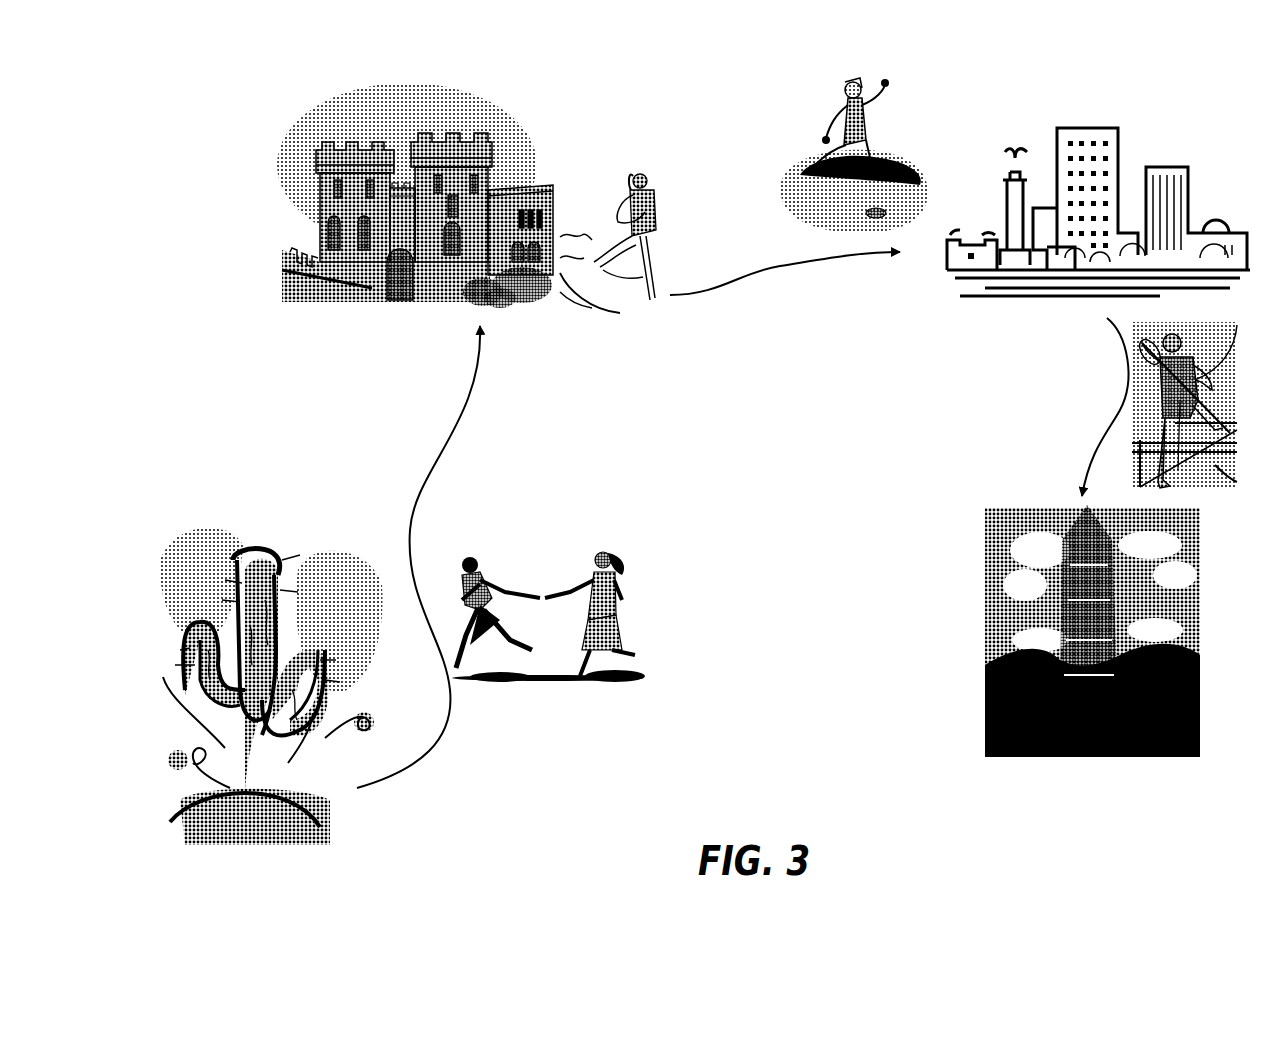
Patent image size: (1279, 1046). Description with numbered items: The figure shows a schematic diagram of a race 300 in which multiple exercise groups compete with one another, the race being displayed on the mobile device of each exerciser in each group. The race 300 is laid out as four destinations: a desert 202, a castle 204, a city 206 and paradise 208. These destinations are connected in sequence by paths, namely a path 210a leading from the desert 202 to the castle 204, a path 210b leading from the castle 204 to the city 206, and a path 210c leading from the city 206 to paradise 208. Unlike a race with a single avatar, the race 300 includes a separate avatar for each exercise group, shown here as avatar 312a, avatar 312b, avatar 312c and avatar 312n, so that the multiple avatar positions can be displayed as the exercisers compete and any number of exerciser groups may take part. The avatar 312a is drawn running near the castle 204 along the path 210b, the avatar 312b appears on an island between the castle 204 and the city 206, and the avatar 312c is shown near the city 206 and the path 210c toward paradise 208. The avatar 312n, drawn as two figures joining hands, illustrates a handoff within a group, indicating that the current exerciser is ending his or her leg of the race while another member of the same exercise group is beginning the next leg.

The race 300 is at (238, 94).
The desert 202 is at (273, 553).
The castle 204 is at (500, 147).
The city 206 is at (1090, 138).
The paradise 208 is at (1003, 530).
The path 210a is at (431, 490).
The path 210b is at (779, 273).
The path 210c is at (1123, 402).
The avatar 312a is at (648, 210).
The avatar 312b is at (853, 118).
The avatar 312c is at (1215, 463).
The avatar 312n is at (579, 709).